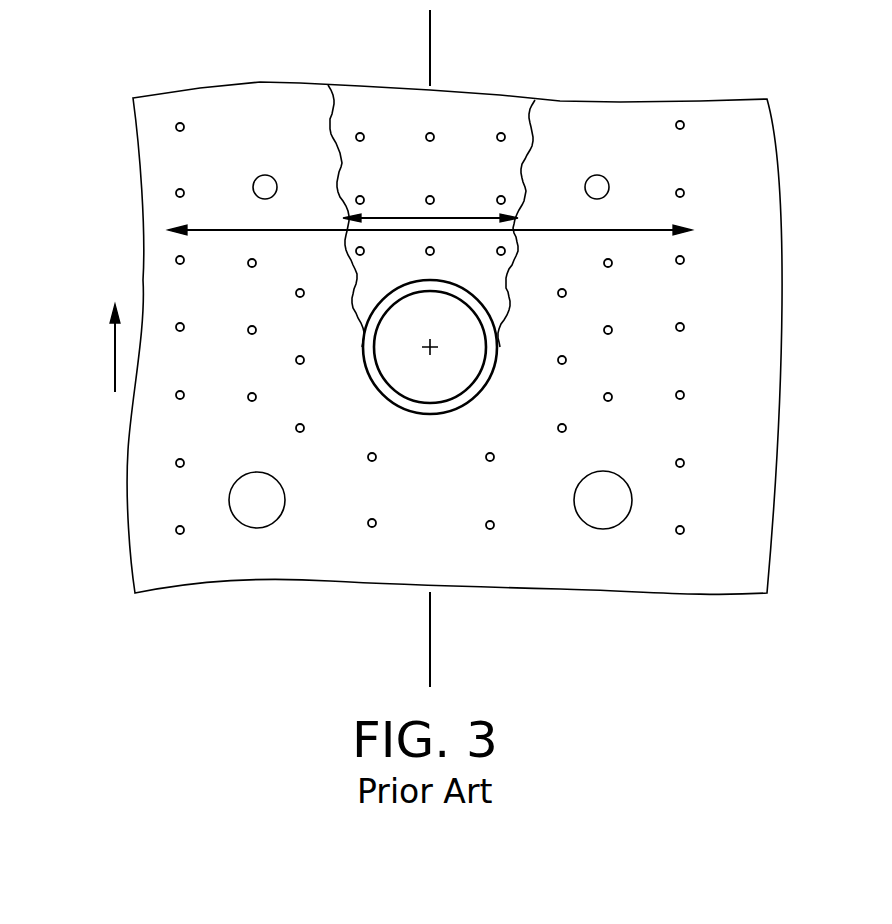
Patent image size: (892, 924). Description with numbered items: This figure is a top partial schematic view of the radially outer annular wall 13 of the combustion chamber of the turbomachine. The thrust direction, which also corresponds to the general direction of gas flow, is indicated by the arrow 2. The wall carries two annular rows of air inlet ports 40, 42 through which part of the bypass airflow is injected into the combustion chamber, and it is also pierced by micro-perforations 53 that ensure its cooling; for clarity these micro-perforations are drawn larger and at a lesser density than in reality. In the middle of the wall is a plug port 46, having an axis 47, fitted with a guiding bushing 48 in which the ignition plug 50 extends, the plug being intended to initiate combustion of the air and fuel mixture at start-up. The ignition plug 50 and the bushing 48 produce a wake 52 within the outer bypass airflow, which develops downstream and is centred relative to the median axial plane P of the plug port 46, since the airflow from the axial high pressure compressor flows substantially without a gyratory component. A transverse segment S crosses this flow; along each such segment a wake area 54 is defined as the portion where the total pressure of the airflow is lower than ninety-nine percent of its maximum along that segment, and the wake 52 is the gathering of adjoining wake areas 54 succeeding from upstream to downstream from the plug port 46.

The radially outer annular wall 13 is at (177, 568).
The wake 52 is at (533, 128).
The median axial plane P is at (430, 683).
The air inlet port 42 is at (257, 176).
The transverse segment S is at (625, 229).
The wake area 54 is at (463, 216).
The guiding bushing 48 is at (480, 395).
The plug port 46 is at (430, 385).
The ignition plug 50 is at (428, 404).
The axis 47 is at (426, 354).
The air inlet port 40 is at (257, 529).
The micro-perforations 53 is at (680, 536).
The arrow 2 is at (115, 358).